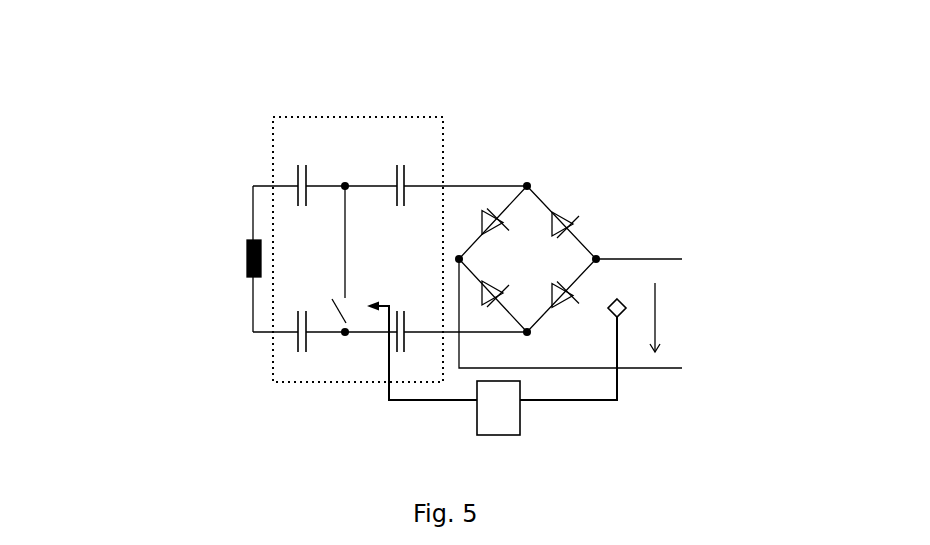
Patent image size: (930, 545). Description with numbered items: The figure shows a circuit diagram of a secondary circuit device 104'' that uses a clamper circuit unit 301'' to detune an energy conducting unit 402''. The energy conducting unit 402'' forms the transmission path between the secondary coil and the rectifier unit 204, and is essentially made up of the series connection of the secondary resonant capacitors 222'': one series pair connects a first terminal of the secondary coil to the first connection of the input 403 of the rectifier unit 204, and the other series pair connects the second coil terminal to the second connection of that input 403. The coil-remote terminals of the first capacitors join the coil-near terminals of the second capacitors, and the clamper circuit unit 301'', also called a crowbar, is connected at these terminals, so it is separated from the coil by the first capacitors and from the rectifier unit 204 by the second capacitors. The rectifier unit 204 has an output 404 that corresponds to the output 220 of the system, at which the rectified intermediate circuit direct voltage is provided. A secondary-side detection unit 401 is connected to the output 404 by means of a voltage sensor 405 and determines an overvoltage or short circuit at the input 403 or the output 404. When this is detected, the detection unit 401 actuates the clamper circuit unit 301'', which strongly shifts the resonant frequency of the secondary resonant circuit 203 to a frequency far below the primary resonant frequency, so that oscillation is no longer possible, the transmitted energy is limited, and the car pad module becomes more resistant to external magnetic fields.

The secondary circuit device 104'' is at (186, 177).
The energy conducting unit 402'' is at (381, 207).
The series connection of the secondary resonant capacitors 222'' is at (353, 217).
The clamper circuit unit 301'' is at (386, 254).
The input of the rectifier unit 403 is at (502, 175).
The rectifier unit 204 is at (545, 202).
The output of the rectifier unit 404 is at (617, 225).
The output of the system 220 is at (715, 240).
The voltage sensor 405 is at (618, 300).
The secondary resonant circuit 203 is at (337, 367).
The secondary-side detection unit 401 is at (520, 415).